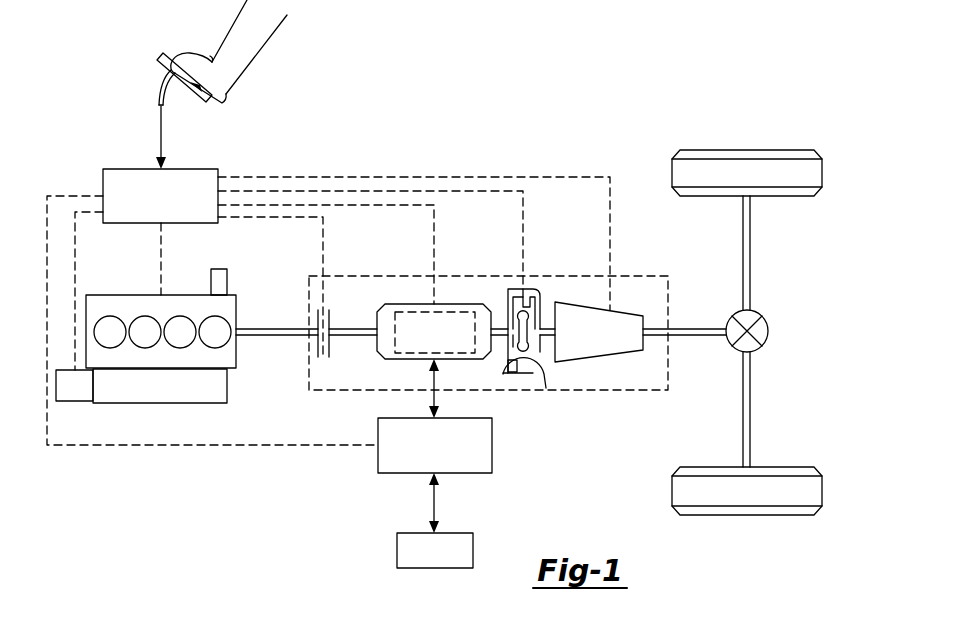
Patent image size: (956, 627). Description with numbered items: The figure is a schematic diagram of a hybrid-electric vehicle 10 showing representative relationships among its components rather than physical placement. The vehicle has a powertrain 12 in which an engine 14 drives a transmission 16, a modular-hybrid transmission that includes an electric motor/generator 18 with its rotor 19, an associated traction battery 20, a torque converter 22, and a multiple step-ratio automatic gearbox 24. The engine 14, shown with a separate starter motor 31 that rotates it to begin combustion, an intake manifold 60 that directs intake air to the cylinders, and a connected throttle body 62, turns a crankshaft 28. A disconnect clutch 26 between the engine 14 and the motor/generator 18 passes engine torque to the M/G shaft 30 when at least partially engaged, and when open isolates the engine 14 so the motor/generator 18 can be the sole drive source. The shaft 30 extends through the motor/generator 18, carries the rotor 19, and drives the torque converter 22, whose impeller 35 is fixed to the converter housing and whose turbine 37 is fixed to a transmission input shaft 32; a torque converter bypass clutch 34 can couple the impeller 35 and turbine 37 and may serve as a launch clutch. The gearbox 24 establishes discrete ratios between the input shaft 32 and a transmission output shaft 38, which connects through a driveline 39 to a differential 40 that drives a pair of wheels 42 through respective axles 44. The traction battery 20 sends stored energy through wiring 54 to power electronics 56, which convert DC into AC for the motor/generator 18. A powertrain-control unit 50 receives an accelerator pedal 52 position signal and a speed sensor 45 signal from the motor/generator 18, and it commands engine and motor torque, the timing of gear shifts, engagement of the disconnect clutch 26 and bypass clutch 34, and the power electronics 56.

The hybrid-electric vehicle 10 is at (626, 90).
The powertrain 12 is at (264, 484).
The engine 14 is at (103, 295).
The transmission 16 is at (465, 276).
The electric motor/generator (M/G) 18 is at (417, 304).
The rotor 19 is at (408, 354).
The traction battery 20 is at (397, 550).
The torque converter 22 is at (520, 374).
The gearbox 24 is at (600, 362).
The disconnect clutch 26 is at (323, 349).
The crankshaft 28 is at (293, 329).
The M/G shaft 30 is at (357, 329).
The starter motor 31 is at (227, 282).
The transmission input shaft 32 is at (547, 329).
The torque converter bypass clutch 34 is at (527, 290).
The impeller 35 is at (542, 362).
The turbine 37 is at (505, 352).
The transmission output shaft 38 is at (655, 329).
The driveline 39 is at (695, 329).
The differential 40 is at (768, 333).
The wheels 42 is at (716, 150).
The axles 44 is at (751, 255).
The speed sensor 45 is at (508, 372).
The powertrain-control unit (PCU) 50 is at (118, 169).
The accelerator pedal 52 is at (157, 71).
The wiring 54 is at (428, 503).
The power electronics 56 is at (492, 445).
The intake manifold 60 is at (160, 403).
The throttle body 62 is at (75, 403).